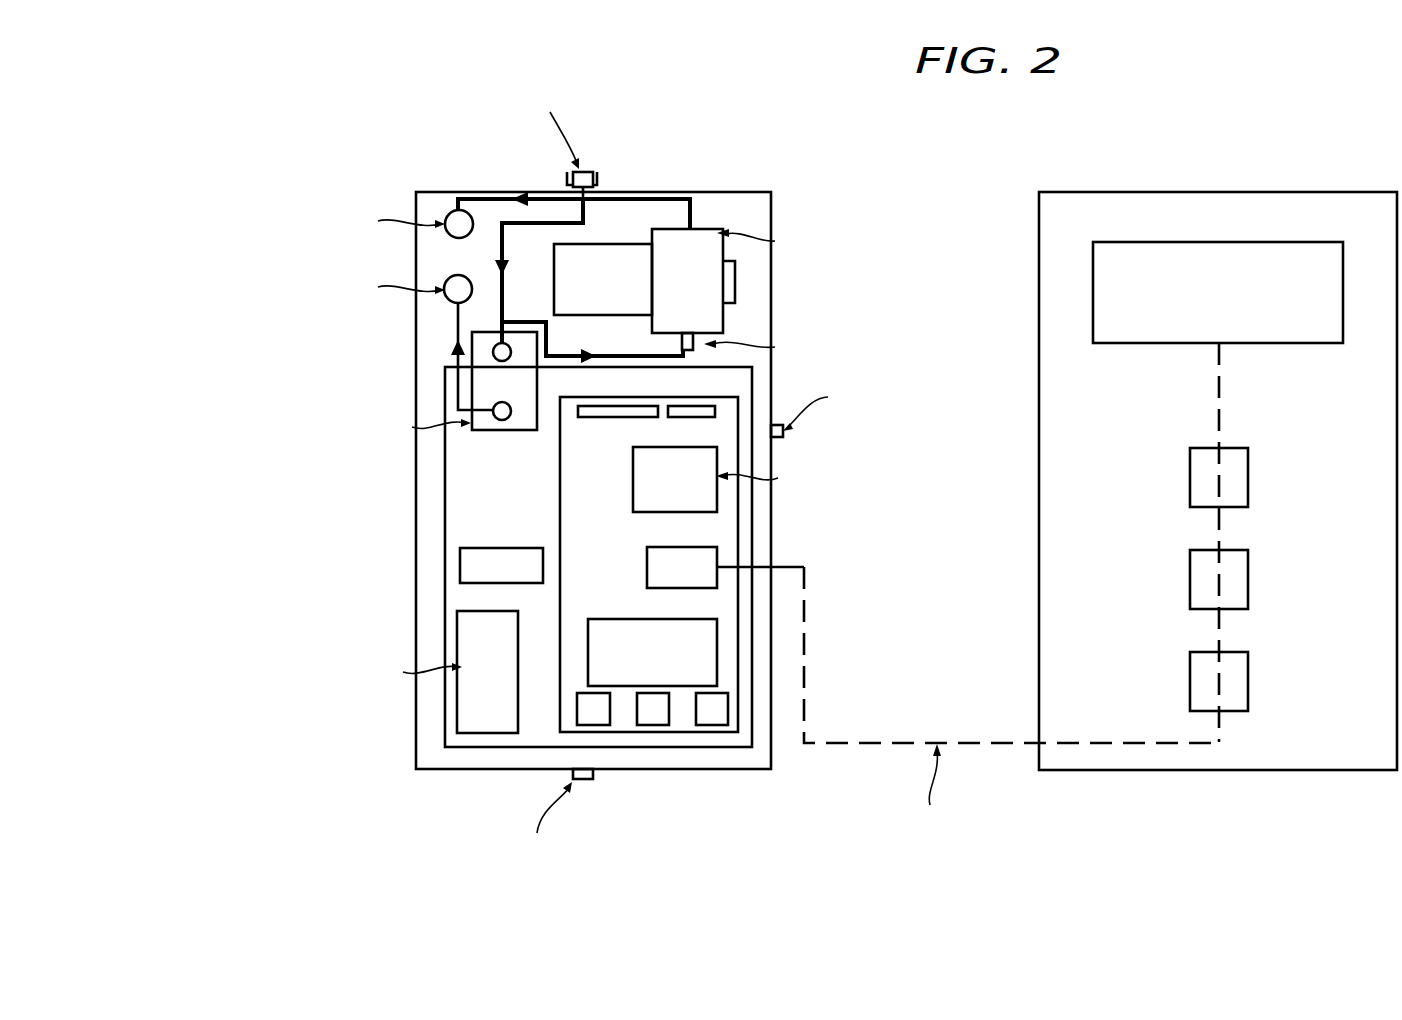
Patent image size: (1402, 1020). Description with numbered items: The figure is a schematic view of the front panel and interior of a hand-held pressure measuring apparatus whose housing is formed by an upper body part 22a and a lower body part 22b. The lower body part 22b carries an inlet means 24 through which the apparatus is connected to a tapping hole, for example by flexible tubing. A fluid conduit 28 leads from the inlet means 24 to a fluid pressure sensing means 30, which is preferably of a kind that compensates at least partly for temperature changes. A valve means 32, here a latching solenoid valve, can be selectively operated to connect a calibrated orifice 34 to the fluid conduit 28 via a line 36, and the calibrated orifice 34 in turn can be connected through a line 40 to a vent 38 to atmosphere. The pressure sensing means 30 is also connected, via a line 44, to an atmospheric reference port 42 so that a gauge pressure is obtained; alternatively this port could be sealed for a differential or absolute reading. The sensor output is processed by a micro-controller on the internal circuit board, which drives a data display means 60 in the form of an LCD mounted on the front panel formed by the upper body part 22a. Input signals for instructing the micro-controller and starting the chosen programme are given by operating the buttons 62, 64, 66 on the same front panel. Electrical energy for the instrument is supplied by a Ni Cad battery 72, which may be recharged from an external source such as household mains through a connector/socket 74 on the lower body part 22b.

The upper body part 22a is at (1268, 200).
The lower body part 22b is at (760, 192).
The inlet means 24 is at (587, 172).
The fluid conduit 28 is at (500, 247).
The fluid pressure sensing means 30 is at (523, 391).
The valve means 32 is at (707, 314).
The calibrated orifice 34 is at (684, 333).
The line 36 is at (610, 352).
The vent 38 is at (455, 210).
The line 40 is at (692, 205).
The atmospheric reference port 42 is at (442, 301).
The line 44 is at (458, 362).
The data display means 60 is at (1123, 337).
The button 62 is at (1243, 686).
The button 64 is at (1243, 584).
The button 66 is at (1243, 480).
The Ni Cad battery 72 is at (504, 688).
The connector/socket 74 is at (590, 780).